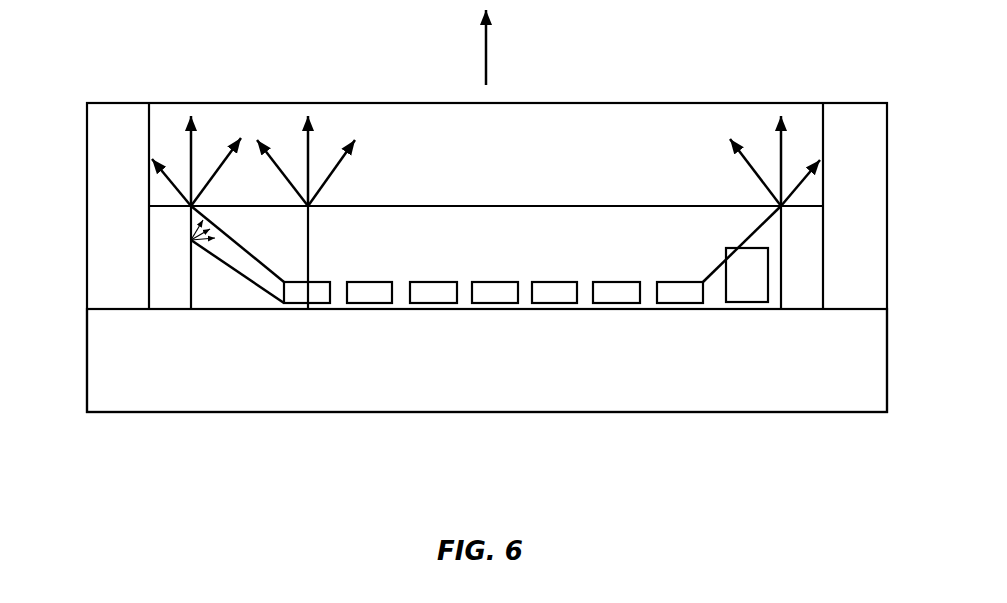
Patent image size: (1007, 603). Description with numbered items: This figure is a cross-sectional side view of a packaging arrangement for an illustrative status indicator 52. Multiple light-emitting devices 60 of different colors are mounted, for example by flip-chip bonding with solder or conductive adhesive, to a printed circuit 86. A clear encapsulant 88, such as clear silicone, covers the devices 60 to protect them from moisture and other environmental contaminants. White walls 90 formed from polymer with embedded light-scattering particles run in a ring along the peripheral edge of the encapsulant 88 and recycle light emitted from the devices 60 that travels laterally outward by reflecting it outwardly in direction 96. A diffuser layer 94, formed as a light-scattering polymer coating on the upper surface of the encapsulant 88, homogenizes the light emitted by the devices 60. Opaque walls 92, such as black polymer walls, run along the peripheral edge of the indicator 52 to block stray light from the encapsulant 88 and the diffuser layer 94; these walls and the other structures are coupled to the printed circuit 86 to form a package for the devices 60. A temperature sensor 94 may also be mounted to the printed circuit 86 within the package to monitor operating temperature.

The indicator 52 is at (878, 52).
The light-emitting devices 60 is at (433, 292).
The printed circuit 86 is at (102, 367).
The clear encapsulant 88 is at (280, 268).
The white walls 90 is at (162, 225).
The opaque walls 92 is at (102, 142).
The diffuser layer 94 is at (670, 112).
The direction 96 is at (486, 45).